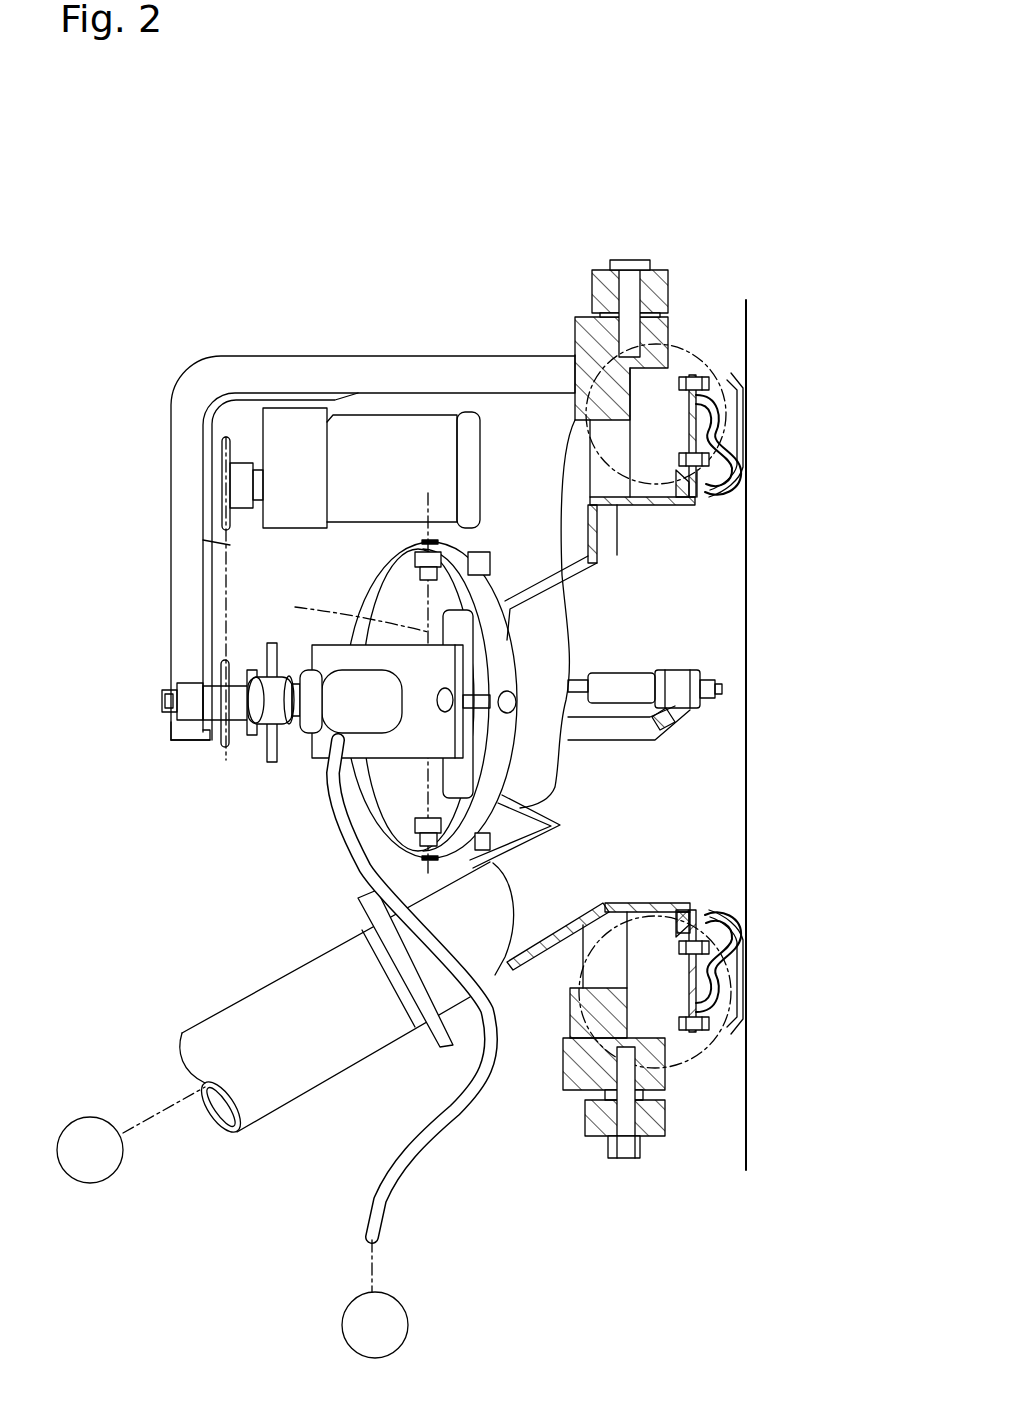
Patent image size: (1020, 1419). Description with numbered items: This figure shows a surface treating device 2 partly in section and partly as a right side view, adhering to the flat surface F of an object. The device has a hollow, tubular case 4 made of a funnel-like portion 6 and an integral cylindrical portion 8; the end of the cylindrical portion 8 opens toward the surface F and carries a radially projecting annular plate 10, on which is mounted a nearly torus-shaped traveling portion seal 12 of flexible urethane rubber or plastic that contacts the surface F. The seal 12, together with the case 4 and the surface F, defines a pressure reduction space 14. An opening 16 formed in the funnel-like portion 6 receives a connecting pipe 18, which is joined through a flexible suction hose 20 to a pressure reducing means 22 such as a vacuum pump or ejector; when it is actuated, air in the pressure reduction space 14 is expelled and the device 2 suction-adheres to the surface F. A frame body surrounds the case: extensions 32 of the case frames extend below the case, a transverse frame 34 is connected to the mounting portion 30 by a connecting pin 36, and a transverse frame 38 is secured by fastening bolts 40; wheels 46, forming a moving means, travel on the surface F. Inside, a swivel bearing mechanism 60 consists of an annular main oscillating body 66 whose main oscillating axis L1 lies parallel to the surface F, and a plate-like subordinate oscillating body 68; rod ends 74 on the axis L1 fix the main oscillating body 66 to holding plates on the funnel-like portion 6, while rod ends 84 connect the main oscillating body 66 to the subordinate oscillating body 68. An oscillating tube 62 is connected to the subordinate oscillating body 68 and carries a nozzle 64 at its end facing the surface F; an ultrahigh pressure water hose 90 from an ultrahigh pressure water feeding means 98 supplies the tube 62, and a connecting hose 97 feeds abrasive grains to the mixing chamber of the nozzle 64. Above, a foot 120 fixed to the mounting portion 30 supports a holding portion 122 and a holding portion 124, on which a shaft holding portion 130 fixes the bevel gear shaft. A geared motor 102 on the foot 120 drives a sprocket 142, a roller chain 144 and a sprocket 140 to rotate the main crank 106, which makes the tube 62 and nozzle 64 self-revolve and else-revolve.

The surface treating device 2 is at (410, 285).
The case 4 is at (520, 590).
The funnel-like portion 6 is at (590, 565).
The cylindrical portion 8 is at (600, 520).
The annular plate 10 is at (660, 1120).
The traveling portion seal 12 is at (750, 437).
The pressure reduction space 14 is at (705, 593).
The opening 16 is at (590, 855).
The connecting pipe 18 is at (450, 990).
The suction hose 20 is at (255, 1000).
The pressure reducing means 22 is at (107, 1166).
The mounting portion 30 is at (668, 352).
The extensions 32 is at (575, 1100).
The transverse frame 34 is at (600, 283).
The connecting pin 36 is at (628, 290).
The transverse frame 38 is at (658, 1120).
The fastening bolts 40 is at (625, 1158).
The wheels 46 is at (740, 340).
The swivel bearing mechanism 60 is at (350, 570).
The oscillating tube 62 is at (335, 735).
The nozzle 64 is at (698, 668).
The main oscillating body 66 is at (372, 812).
The subordinate oscillating body 68 is at (400, 735).
The rod end 74 is at (400, 838).
The rod end 84 is at (482, 715).
The ultrahigh pressure water hose 90 is at (410, 1160).
The connecting hose 97 is at (625, 735).
The ultrahigh pressure water feeding means 98 is at (392, 1341).
The geared motor 102 is at (380, 440).
The main crank 106 is at (240, 718).
The foot 120 is at (450, 398).
The holding portion 122 is at (207, 480).
The holding portion 124 is at (175, 725).
The shaft holding portion 130 is at (190, 688).
The sprocket 140 is at (210, 655).
The sprocket 142 is at (225, 440).
The roller chain 144 is at (230, 545).
The surface F is at (722, 756).
The main oscillating axis L1 is at (343, 610).